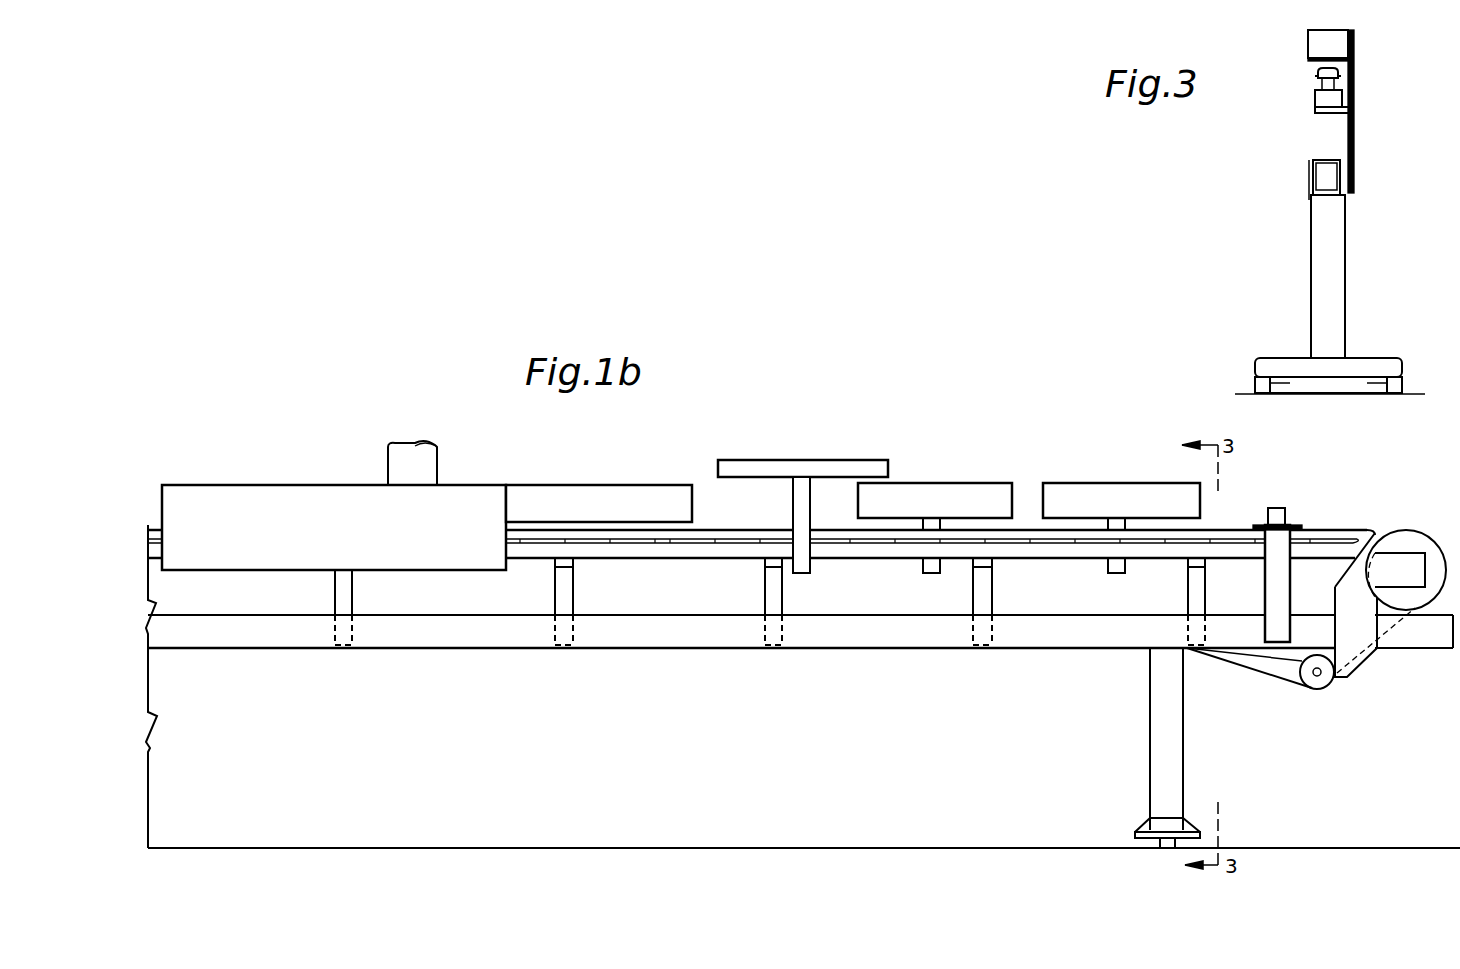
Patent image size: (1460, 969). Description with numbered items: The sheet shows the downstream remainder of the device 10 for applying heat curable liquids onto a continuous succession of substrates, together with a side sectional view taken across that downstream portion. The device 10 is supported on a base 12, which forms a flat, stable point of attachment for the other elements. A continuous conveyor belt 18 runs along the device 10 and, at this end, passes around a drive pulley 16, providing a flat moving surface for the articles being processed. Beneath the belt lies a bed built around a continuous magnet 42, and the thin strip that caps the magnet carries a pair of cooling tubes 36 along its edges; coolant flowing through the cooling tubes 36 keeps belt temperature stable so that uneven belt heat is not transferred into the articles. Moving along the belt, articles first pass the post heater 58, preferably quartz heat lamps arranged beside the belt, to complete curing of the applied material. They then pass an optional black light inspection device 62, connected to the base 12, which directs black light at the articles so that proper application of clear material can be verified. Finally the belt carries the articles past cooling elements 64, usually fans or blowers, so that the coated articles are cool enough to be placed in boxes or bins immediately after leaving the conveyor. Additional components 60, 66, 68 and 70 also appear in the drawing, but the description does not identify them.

In FIG. 1B, the device 10 is at (948, 447).
In FIG. 1B, the base 12 is at (878, 642).
In FIG. 3, the base 12 is at (1334, 274).
In FIG. 1B, the drive pulley 16 is at (1425, 545).
In FIG. 1B, the conveyor belt 18 is at (1285, 683).
In FIG. 1B, the cooling tubes 36 is at (738, 524).
In FIG. 3, the cooling tubes 36 is at (1318, 75).
In FIG. 3, the continuous magnet 42 is at (1322, 85).
In FIG. 1B, the post heater 58 is at (313, 492).
In FIG. 1B, the knob 60 is at (428, 462).
In FIG. 1B, the black light inspection device 62 is at (806, 465).
In FIG. 1B, the cooling elements 64 is at (1050, 488).
In FIG. 1B, the post / box 66 is at (1282, 510).
In FIG. 3, the post / box 66 is at (1340, 46).
In FIG. 3, the bracket 68 is at (1350, 68).
In FIG. 3, the mounting plate 70 is at (1352, 142).